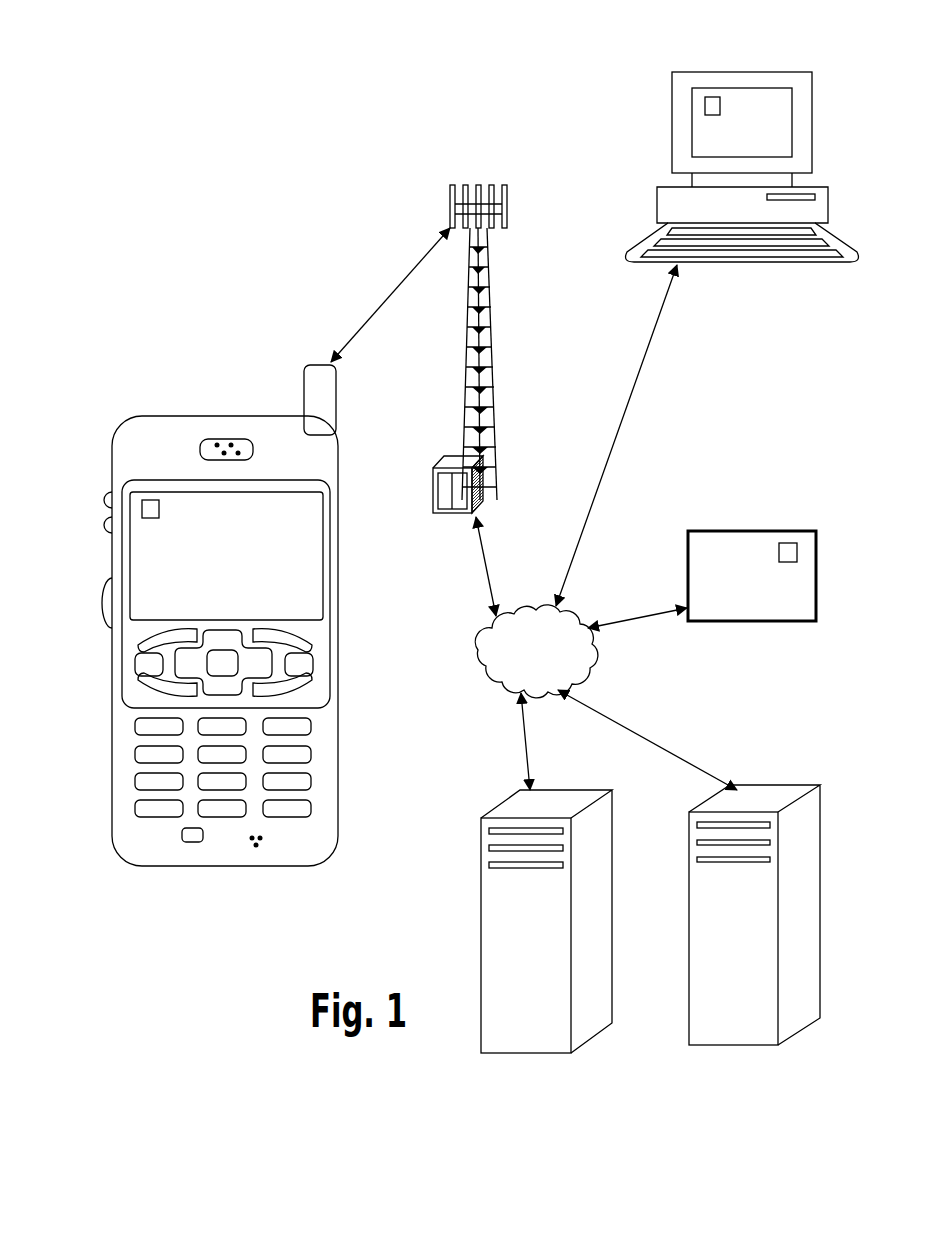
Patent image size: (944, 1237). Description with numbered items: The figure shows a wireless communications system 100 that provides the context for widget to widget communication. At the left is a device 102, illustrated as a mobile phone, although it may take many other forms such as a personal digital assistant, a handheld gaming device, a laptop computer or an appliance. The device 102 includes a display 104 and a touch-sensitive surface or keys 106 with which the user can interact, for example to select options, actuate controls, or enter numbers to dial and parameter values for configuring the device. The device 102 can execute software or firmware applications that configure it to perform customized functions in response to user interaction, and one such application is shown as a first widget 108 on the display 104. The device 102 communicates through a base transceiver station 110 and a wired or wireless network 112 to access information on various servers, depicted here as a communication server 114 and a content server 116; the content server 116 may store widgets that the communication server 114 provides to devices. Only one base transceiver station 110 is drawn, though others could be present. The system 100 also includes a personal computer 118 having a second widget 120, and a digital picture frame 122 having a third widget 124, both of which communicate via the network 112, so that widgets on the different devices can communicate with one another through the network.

The wireless communications system 100 is at (440, 106).
The device 102 is at (142, 867).
The display 104 is at (318, 560).
The keys 106 is at (100, 632).
The first widget 108 is at (142, 505).
The base transceiver station 110 is at (467, 358).
The network 112 is at (490, 671).
The communication server 114 is at (487, 890).
The content server 116 is at (692, 869).
The personal computer 118 is at (657, 205).
The second widget 120 is at (705, 100).
The digital picture frame 122 is at (693, 551).
The third widget 124 is at (797, 552).